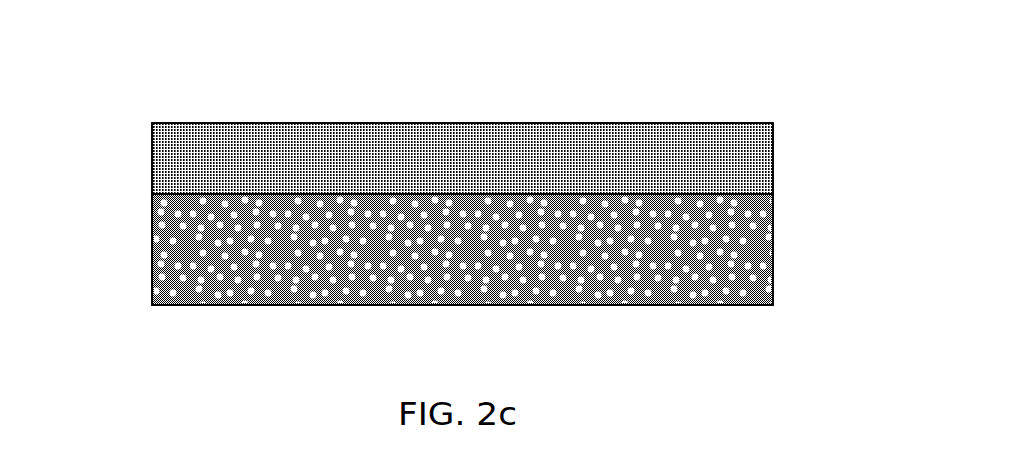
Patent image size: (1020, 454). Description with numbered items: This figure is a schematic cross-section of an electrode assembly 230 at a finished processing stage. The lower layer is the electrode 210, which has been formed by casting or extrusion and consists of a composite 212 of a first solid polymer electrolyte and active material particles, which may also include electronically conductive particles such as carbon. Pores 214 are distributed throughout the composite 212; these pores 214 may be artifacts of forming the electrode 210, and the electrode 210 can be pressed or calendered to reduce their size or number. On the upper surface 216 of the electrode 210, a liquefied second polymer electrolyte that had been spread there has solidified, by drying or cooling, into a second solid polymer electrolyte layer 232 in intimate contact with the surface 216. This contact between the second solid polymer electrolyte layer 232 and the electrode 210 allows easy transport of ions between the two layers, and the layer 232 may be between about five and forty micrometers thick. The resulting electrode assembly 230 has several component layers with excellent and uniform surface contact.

The electrode 210 is at (454, 282).
The composite 212 is at (454, 223).
The pores 214 is at (158, 230).
The surface 216 is at (704, 191).
The electrode assembly 230 is at (459, 225).
The second solid polymer electrolyte layer 232 is at (550, 162).